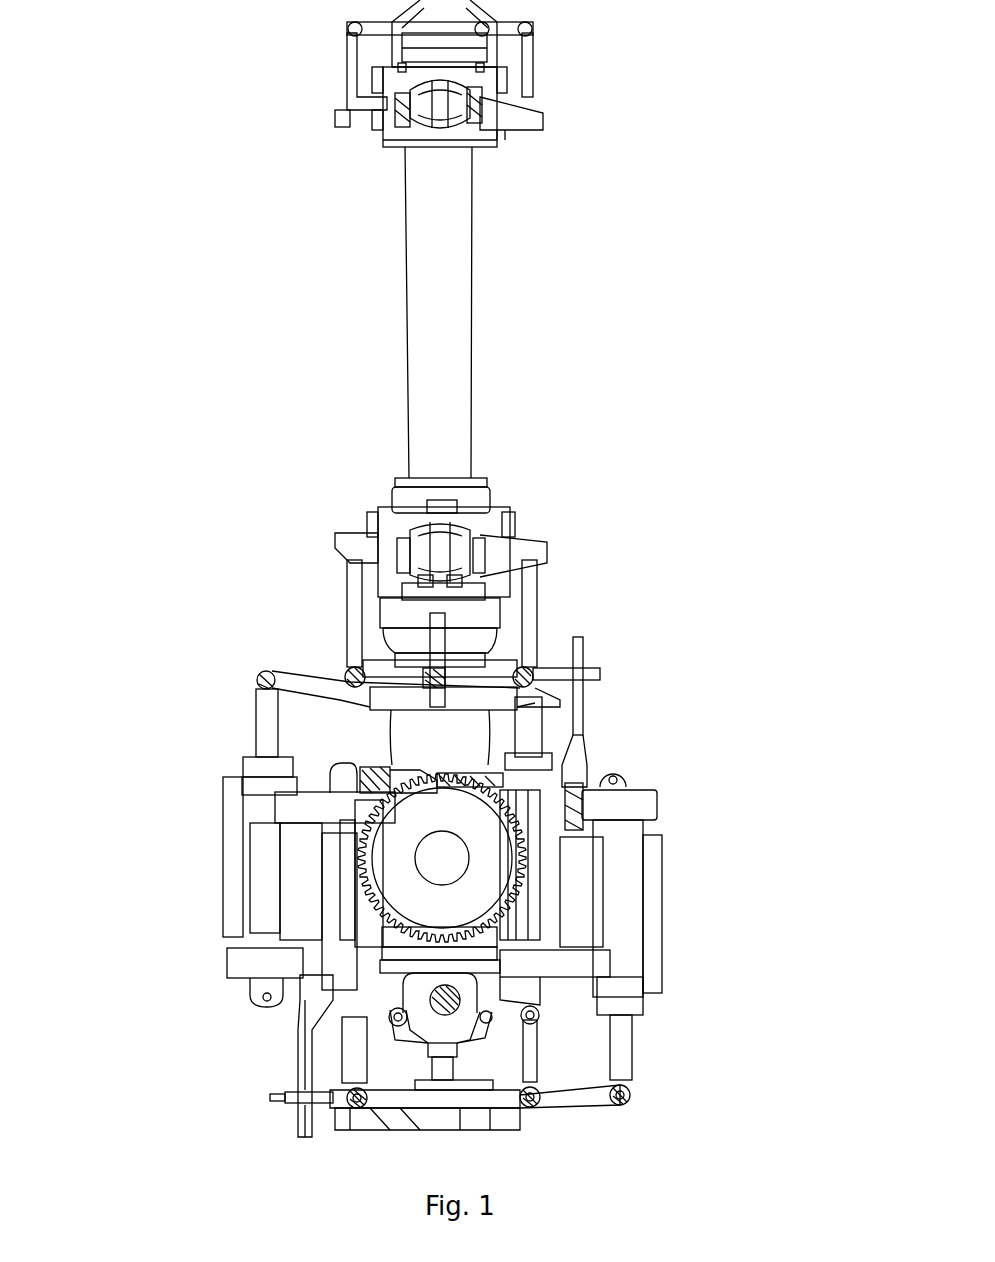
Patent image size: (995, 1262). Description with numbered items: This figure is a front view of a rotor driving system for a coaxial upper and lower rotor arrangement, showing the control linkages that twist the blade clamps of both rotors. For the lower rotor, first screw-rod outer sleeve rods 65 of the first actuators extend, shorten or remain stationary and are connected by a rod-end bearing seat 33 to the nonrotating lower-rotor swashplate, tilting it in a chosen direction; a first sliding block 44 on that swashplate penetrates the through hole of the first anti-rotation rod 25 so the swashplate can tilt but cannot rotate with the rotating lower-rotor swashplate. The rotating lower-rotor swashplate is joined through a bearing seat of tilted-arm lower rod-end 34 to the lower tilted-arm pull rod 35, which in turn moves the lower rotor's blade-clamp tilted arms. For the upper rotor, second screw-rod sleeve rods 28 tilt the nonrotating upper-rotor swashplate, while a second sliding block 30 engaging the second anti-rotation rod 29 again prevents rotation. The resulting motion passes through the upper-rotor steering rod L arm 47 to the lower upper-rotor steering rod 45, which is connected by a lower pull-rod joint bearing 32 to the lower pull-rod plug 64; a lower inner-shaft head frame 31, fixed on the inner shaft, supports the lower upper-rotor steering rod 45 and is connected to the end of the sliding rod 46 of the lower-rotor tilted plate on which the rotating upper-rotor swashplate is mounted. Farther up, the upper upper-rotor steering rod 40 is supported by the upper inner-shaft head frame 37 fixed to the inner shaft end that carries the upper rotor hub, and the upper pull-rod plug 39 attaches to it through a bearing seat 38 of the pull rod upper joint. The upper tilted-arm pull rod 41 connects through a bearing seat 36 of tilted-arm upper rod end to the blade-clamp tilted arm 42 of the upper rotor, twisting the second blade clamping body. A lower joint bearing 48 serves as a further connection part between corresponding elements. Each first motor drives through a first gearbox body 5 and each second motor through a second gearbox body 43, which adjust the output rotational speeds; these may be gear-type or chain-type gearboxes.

The first gearbox body 5 is at (578, 958).
The first anti-rotation rod 25 is at (580, 700).
The second screw-rod sleeve rod 28 is at (618, 1060).
The second anti-rotation rod 29 is at (297, 1123).
The second sliding block 30 is at (283, 1097).
The lower inner-shaft head frame 31 is at (385, 1043).
The lower pull-rod joint bearing 32 is at (430, 997).
The rod-end bearing seat 33 is at (258, 689).
The bearing seat of tilted-arm lower rod-end 34 is at (343, 660).
The lower tilted-arm pull rod 35 is at (345, 597).
The bearing seat of tilted-arm upper rod end 36 is at (350, 112).
The upper inner-shaft head frame 37 is at (395, 11).
The bearing seat of pull rod upper joint 38 is at (420, 30).
The upper pull-rod plug 39 is at (447, 52).
The upper upper-rotor steering rod 40 is at (503, 38).
The upper tilted-arm pull rod 41 is at (545, 76).
The blade-clamp tilted arm of the upper rotor 42 is at (550, 119).
The second gearbox body 43 is at (297, 810).
The first sliding block 44 is at (598, 685).
The lower upper-rotor steering rod 45 is at (515, 995).
The sliding rod of the lower-rotor tilted plate 46 is at (462, 1068).
The upper-rotor steering rod L arm 47 is at (548, 1057).
The lower joint bearing 48 is at (548, 1092).
The lower pull-rod plug 64 is at (446, 1003).
The first screw-rod outer sleeve rod 65 is at (275, 730).